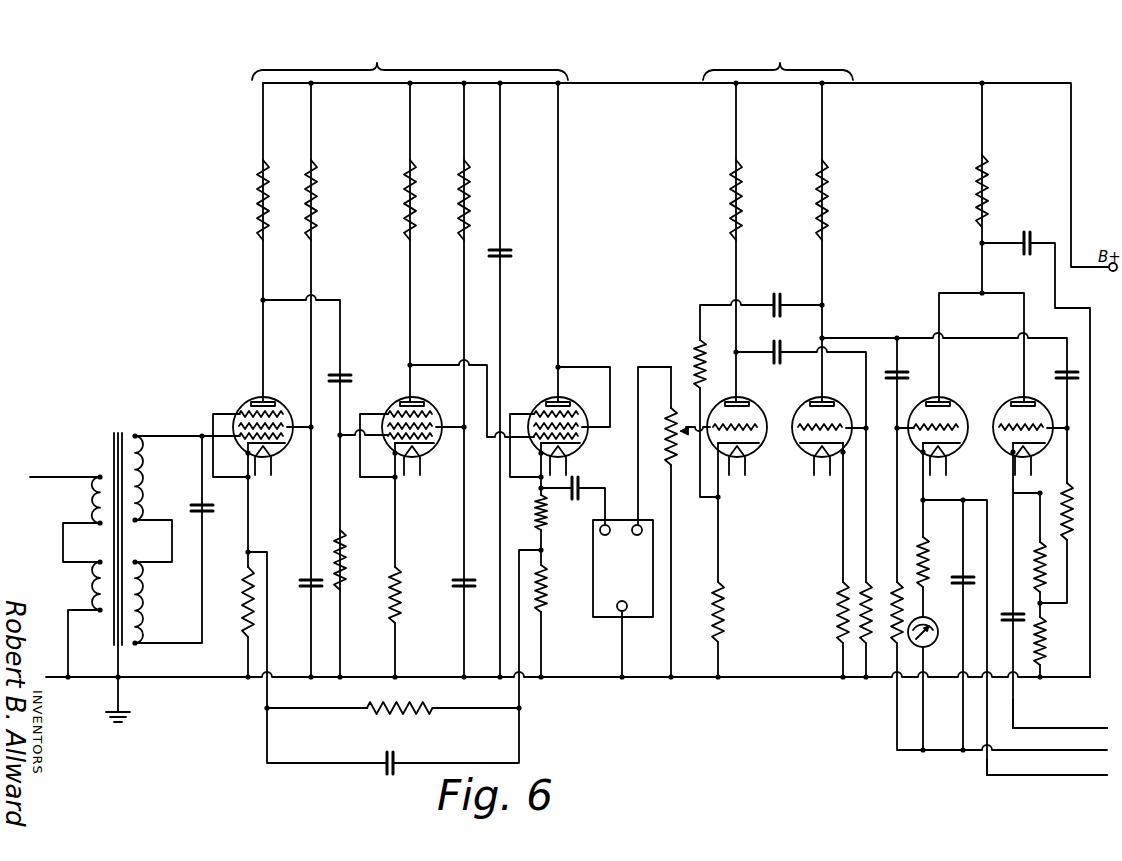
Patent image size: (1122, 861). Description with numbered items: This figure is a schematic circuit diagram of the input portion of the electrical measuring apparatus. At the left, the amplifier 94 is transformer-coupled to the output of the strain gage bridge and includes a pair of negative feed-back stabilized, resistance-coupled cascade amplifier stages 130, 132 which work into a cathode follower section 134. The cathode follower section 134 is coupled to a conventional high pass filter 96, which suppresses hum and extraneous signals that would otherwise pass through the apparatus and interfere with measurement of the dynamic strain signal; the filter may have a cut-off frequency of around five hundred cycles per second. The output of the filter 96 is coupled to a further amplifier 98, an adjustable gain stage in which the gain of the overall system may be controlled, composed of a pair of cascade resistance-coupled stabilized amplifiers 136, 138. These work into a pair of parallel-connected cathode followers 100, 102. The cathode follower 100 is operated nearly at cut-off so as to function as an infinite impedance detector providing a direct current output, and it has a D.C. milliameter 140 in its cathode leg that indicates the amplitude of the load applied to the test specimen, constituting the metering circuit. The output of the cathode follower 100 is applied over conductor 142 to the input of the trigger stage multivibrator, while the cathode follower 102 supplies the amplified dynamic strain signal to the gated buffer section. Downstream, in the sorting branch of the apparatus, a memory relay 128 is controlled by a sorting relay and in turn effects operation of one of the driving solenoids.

The amplifier 94 is at (379, 63).
The amplifier stage 98 is at (780, 64).
The high pass filter 96 is at (625, 612).
The cascade amplifier stage 130 is at (247, 400).
The cascade amplifier stage 132 is at (388, 404).
The cathode follower section 134 is at (535, 403).
The stabilized amplifier 136 is at (741, 400).
The stabilized amplifier 138 is at (802, 455).
The cathode follower 100 is at (946, 398).
The cathode follower 102 is at (1030, 398).
The D.C. milliameter 140 is at (925, 641).
The memory relay 128 is at (1073, 728).
The conductor 142 is at (997, 777).